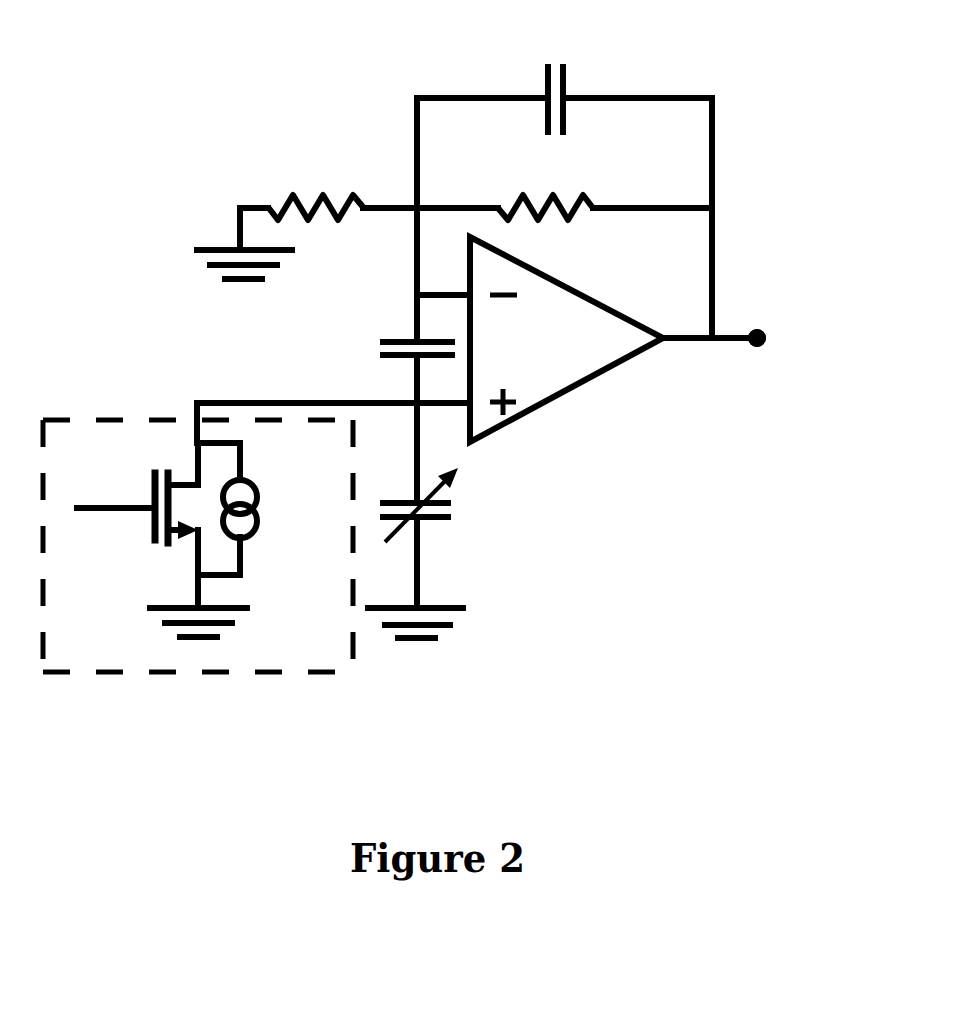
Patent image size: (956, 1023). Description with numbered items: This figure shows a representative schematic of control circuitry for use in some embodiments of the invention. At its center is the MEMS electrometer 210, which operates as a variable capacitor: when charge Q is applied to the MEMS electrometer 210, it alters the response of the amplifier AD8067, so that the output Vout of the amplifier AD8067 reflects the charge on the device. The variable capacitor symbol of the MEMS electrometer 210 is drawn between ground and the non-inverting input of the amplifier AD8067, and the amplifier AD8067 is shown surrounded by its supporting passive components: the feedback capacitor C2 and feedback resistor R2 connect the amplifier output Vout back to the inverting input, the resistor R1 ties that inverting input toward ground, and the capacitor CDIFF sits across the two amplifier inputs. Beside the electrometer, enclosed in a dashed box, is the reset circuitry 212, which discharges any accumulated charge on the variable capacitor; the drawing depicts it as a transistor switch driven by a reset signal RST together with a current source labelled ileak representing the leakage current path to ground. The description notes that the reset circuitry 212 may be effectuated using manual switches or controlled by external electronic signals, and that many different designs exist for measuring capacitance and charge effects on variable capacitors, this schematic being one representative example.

The MEMS electrometer 210 is at (450, 518).
The reset circuitry 212 is at (198, 546).
The feedback capacitor C2 is at (554, 76).
The input resistor R1 is at (315, 186).
The feedback resistor R2 is at (545, 186).
The differential input capacitor CDIFF is at (375, 347).
The amplifier AD8067 is at (566, 339).
The output voltage node Vout is at (797, 360).
The charge on variable capacitor Q is at (400, 492).
The reset transistor RST is at (126, 504).
The leakage current source ileak is at (269, 483).